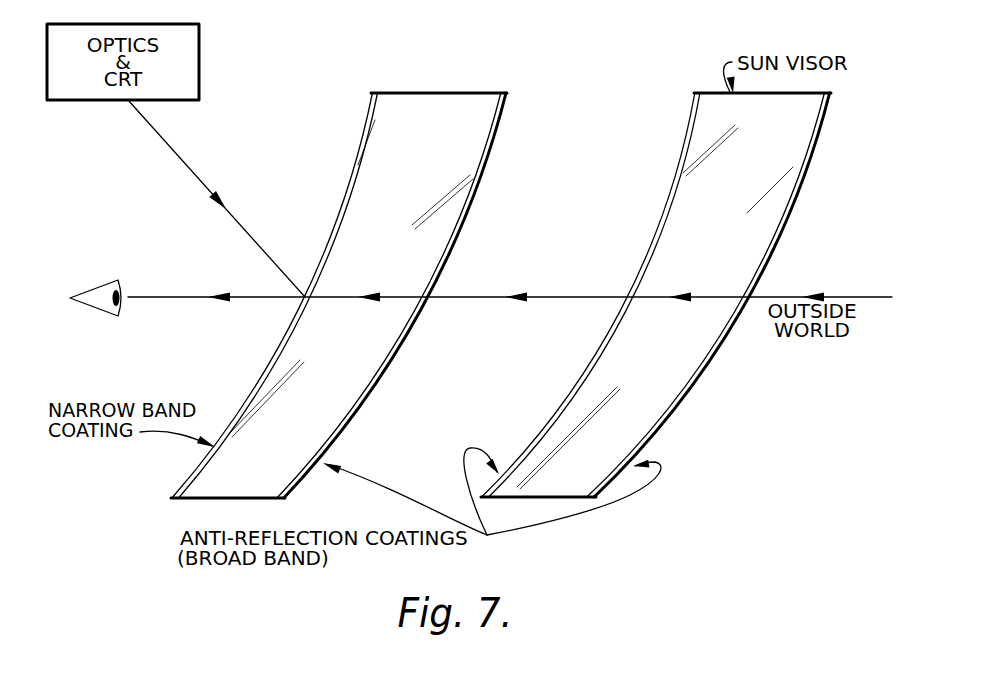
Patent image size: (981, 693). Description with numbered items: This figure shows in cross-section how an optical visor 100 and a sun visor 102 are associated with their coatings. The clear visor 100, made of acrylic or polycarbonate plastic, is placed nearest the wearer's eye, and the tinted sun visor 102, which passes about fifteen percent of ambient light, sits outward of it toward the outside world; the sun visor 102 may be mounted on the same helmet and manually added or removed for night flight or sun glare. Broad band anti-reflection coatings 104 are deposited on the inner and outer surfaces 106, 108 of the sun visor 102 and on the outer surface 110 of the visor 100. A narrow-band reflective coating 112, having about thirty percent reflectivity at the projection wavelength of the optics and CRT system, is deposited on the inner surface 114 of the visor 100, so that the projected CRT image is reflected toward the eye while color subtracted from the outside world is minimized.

The optical visor 100 is at (447, 93).
The sun visor 102 is at (712, 93).
The broad band anti-reflection coatings 104 is at (493, 146).
The inner surface of sun visor 106 is at (596, 360).
The outer surface of sun visor 108 is at (684, 396).
The outer surface of visor 110 is at (452, 244).
The narrow-band reflective coating 112 is at (356, 160).
The inner surface of visor 114 is at (283, 358).